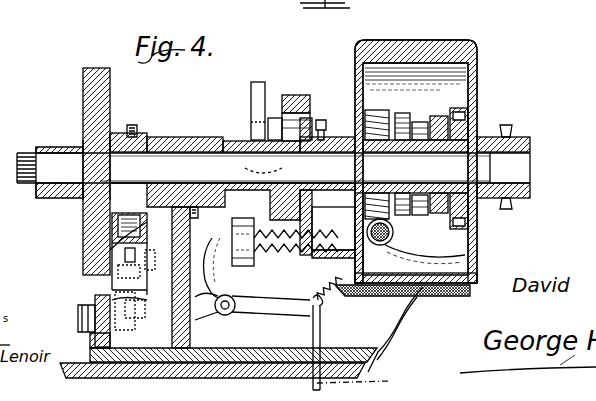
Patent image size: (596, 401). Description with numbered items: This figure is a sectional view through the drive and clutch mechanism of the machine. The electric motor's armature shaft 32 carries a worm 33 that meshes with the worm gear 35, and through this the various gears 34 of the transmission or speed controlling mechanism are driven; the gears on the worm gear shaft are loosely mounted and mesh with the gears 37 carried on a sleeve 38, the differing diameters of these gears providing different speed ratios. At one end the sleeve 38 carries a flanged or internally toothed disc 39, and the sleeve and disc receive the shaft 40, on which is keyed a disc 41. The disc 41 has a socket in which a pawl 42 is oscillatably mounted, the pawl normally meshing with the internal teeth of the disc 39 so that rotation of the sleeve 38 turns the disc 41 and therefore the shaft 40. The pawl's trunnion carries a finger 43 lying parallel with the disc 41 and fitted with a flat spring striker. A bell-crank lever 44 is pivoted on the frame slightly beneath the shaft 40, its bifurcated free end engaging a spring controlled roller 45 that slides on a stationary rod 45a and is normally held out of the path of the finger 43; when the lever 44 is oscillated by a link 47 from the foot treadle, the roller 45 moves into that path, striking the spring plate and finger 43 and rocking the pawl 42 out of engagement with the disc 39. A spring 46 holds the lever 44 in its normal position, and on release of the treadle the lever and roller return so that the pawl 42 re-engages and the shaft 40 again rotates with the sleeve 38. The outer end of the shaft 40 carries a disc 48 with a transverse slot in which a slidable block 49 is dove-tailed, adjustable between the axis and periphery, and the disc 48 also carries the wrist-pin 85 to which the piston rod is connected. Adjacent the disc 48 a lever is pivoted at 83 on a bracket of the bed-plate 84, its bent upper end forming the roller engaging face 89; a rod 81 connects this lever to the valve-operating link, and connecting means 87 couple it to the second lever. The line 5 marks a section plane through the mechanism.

The section line 5 is at (325, 14).
The armature shaft 32 is at (480, 257).
The worm 33 is at (478, 274).
The gears 34 is at (410, 115).
The worm gear 35 is at (378, 120).
The gears 37 is at (477, 100).
The sleeve 38 is at (527, 150).
The flanged or internally toothed disc 39 is at (287, 127).
The shaft 40 is at (202, 163).
The disc 41 is at (307, 123).
The pawl 42 is at (309, 105).
The finger 43 is at (262, 92).
The bell-crank lever 44 is at (273, 315).
The spring controlled roller 45 is at (246, 268).
The stationary rod 45a is at (330, 253).
The spring 46 is at (337, 293).
The link 47 is at (368, 384).
The disc 48 is at (85, 238).
The slidable block 49 is at (86, 199).
The rod 81 is at (127, 268).
The pivot 83 is at (97, 318).
The bed-plate 84 is at (387, 357).
The wrist-pin 85 is at (45, 163).
The connecting means 87 is at (110, 291).
The roller engaging face 89 is at (85, 250).